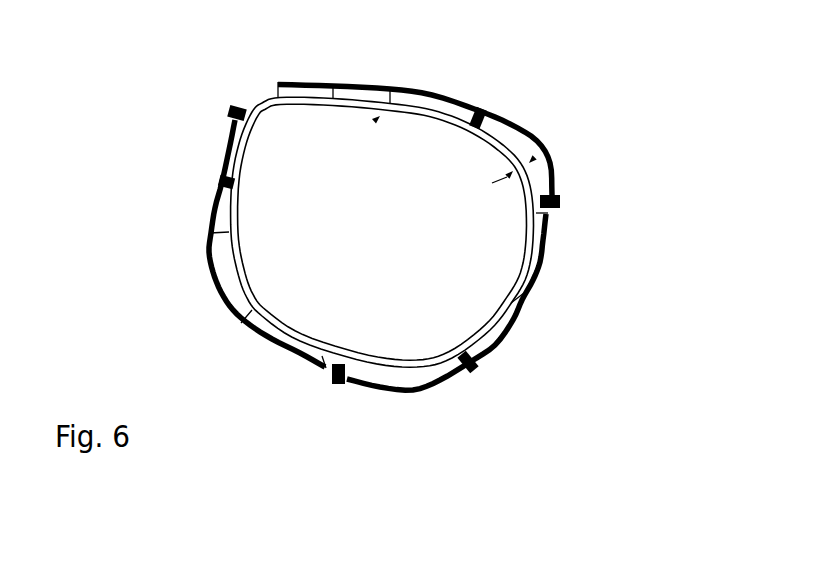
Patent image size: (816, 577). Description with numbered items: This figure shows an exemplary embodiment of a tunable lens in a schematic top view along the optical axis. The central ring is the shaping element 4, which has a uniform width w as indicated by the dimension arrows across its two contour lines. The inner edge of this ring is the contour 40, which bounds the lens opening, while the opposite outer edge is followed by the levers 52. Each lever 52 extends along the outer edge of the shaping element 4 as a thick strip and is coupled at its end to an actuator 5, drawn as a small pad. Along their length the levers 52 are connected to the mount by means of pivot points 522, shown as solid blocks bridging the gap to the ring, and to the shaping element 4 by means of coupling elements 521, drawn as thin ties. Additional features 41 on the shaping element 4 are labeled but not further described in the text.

The shaping element 4 is at (260, 105).
The contour 40 is at (374, 121).
The groove of the frame 41 is at (472, 128).
The actuator 5 is at (227, 110).
The lever 52 is at (433, 94).
The coupling element 521 is at (213, 232).
The pivot point 522 is at (220, 180).
The width w is at (534, 158).